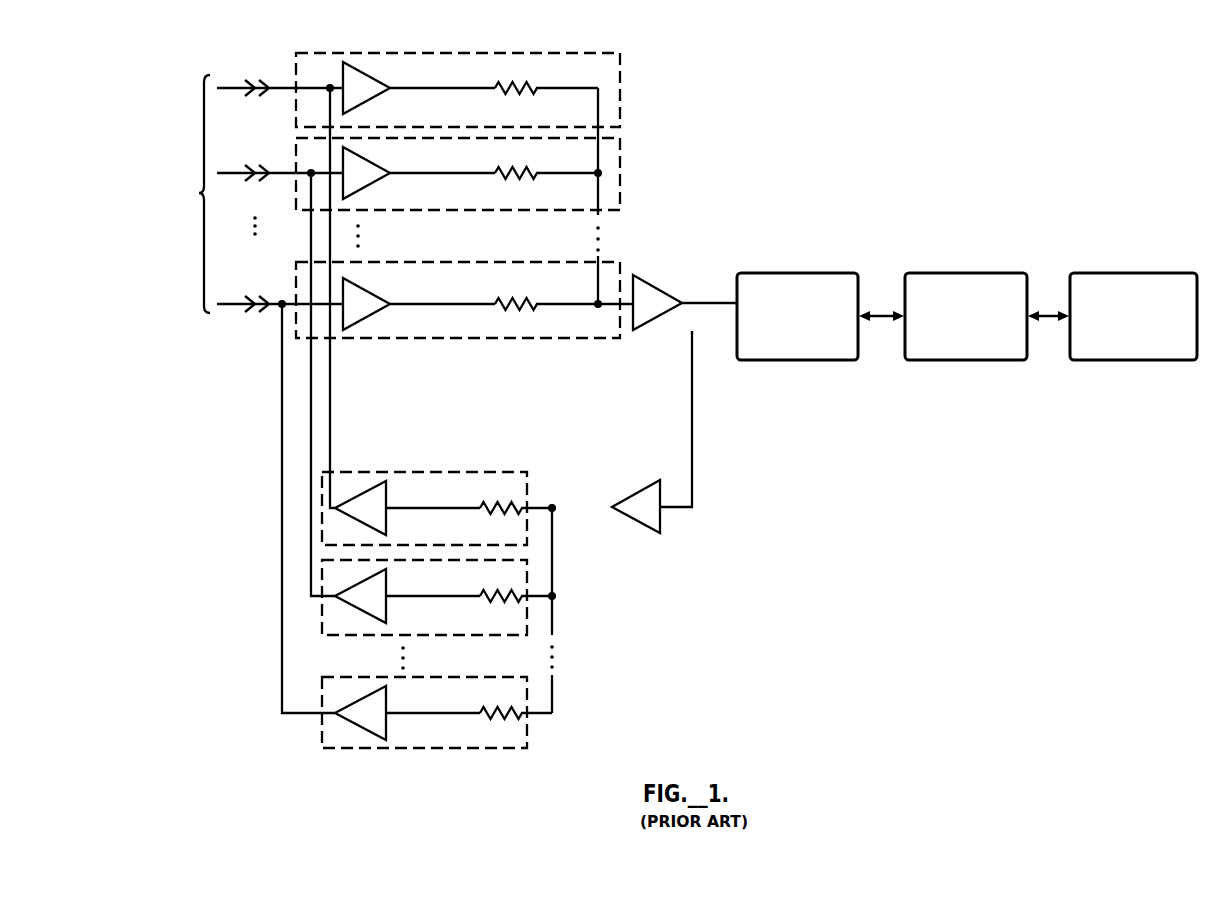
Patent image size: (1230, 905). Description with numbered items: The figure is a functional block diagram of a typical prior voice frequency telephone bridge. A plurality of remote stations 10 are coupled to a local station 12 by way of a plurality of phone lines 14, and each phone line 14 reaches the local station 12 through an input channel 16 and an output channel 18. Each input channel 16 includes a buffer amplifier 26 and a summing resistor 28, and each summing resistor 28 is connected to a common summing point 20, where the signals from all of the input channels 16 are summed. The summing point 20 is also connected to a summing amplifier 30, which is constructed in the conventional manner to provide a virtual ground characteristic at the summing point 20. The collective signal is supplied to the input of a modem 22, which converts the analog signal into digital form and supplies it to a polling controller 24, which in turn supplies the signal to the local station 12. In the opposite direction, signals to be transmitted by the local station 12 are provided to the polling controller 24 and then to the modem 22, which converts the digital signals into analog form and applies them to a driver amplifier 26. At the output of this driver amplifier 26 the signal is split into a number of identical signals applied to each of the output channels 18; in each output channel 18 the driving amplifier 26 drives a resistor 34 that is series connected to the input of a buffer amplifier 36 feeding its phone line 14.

The remote stations 10 is at (152, 194).
The local station 12 is at (1168, 273).
The phone lines 14 is at (222, 88).
The input channel 16 is at (604, 53).
The output channel 18 is at (527, 476).
The summing point 20 is at (596, 308).
The modem 22 is at (828, 273).
The polling controller 24 is at (992, 273).
The buffer amplifier 26 is at (372, 103).
The summing resistor 28 is at (517, 93).
The summing amplifier 30 is at (653, 286).
The resistor 34 is at (500, 502).
The buffer amplifiers 36 is at (386, 494).